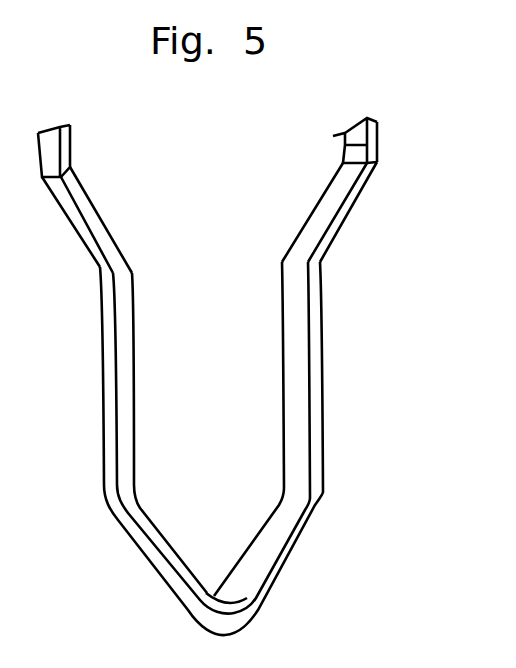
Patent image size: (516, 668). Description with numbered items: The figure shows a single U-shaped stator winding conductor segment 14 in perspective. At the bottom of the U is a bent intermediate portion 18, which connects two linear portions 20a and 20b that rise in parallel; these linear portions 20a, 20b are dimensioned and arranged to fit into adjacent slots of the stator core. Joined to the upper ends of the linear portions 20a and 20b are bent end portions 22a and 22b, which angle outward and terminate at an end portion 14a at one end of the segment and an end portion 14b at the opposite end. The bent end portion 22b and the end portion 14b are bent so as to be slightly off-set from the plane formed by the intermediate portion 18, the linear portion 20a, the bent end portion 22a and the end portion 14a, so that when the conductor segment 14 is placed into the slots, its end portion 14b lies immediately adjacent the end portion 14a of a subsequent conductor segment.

The conductor segment 14 is at (248, 391).
The end portion 14a is at (378, 130).
The end portion 14b is at (73, 158).
The bent intermediate portion 18 is at (232, 622).
The linear portion 20a is at (322, 375).
The linear portion 20b is at (100, 400).
The bent end portion 22a is at (350, 210).
The bent end portion 22b is at (110, 225).